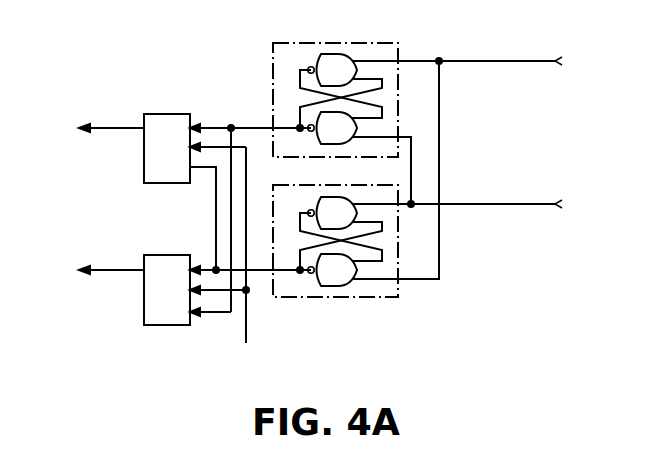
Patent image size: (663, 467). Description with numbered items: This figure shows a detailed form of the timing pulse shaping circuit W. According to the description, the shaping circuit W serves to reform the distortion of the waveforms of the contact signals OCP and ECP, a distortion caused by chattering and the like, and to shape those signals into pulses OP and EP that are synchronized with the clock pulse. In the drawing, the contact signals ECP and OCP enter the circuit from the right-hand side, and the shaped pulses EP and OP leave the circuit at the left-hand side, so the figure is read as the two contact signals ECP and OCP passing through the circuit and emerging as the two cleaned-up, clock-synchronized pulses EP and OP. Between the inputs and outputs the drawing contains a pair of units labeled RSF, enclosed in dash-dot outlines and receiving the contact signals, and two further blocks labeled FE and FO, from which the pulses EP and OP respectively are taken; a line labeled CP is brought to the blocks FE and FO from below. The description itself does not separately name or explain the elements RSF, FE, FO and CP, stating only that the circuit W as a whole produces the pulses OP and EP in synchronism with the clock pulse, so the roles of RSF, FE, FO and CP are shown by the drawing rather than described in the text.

The shaping circuit W is at (241, 28).
The RS flip-flop (NOR latch) RSF is at (330, 43).
The contact signal ECP is at (482, 61).
The contact signal OCP is at (482, 205).
The even flip-flop FE is at (222, 192).
The odd flip-flop FO is at (222, 226).
The clock pulse input CP is at (246, 261).
The pulse EP is at (95, 127).
The pulse OP is at (95, 270).